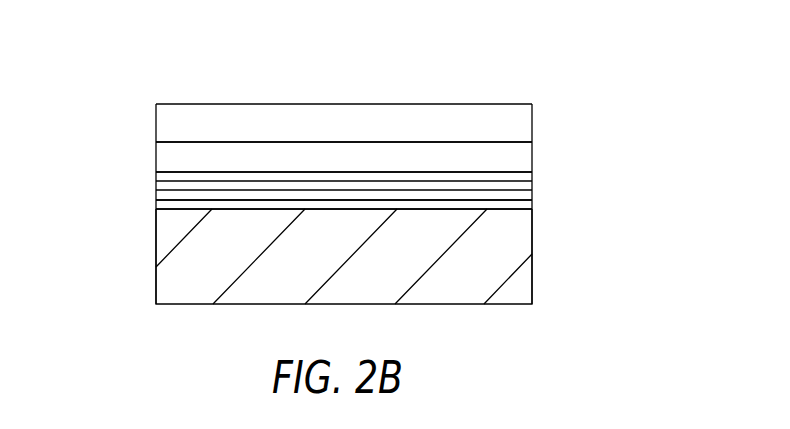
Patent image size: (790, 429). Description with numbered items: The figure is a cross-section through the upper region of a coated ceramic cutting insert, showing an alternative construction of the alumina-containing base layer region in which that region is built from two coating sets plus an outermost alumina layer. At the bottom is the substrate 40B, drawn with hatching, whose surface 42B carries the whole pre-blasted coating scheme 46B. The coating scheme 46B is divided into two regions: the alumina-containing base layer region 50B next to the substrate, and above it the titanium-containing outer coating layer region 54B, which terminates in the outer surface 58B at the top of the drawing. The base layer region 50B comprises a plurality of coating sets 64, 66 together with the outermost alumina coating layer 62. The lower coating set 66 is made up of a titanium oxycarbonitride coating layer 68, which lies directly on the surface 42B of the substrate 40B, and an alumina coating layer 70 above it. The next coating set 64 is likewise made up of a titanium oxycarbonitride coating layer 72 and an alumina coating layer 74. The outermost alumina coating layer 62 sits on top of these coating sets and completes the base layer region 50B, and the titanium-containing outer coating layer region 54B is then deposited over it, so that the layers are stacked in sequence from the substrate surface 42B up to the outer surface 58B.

The substrate 40B is at (480, 295).
The surface of the substrate 42B is at (500, 205).
The pre-blasted coating scheme 46B is at (630, 105).
The alumina-containing base layer region 50B is at (562, 147).
The titanium-containing outer coating layer region 54B is at (562, 105).
The outer surface 58B is at (315, 104).
The outermost alumina coating layer 62 is at (178, 153).
The coating set 64 is at (131, 172).
The coating set 66 is at (131, 193).
The titanium oxycarbonitride coating layer 68 is at (250, 209).
The alumina coating layer 70 is at (222, 197).
The titanium oxycarbonitride coating layer 72 is at (477, 185).
The alumina coating layer 74 is at (412, 173).